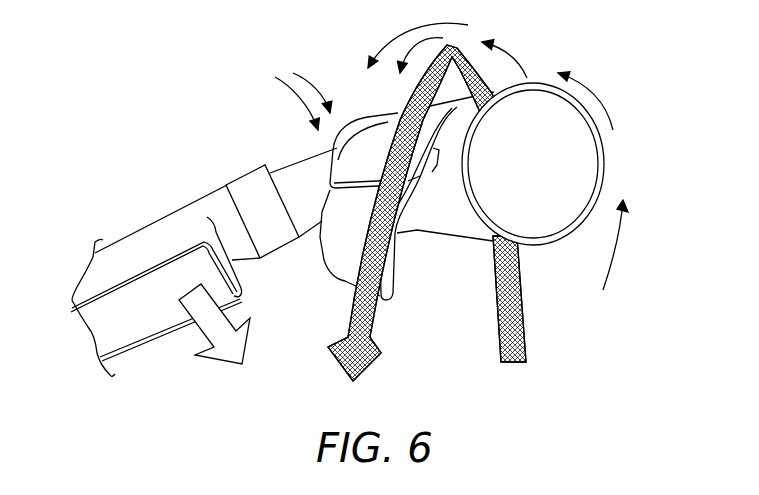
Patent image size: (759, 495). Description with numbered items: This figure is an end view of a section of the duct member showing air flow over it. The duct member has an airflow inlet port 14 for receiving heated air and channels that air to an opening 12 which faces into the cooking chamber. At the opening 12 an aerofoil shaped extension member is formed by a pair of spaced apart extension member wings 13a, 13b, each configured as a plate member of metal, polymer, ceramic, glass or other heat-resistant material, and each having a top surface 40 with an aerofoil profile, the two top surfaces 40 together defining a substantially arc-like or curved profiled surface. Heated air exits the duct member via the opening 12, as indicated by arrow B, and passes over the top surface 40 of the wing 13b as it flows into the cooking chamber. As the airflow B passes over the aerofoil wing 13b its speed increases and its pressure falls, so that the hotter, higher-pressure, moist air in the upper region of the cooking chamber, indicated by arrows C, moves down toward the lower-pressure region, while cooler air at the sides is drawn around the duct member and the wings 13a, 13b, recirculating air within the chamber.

The opening 12 is at (440, 158).
The aerofoil extension member wing 13a is at (145, 253).
The aerofoil extension member wing 13b is at (107, 327).
The airflow inlet port 14 is at (557, 156).
The top surface 40 is at (199, 245).
The airflow B is at (206, 362).
The airflow C is at (510, 53).